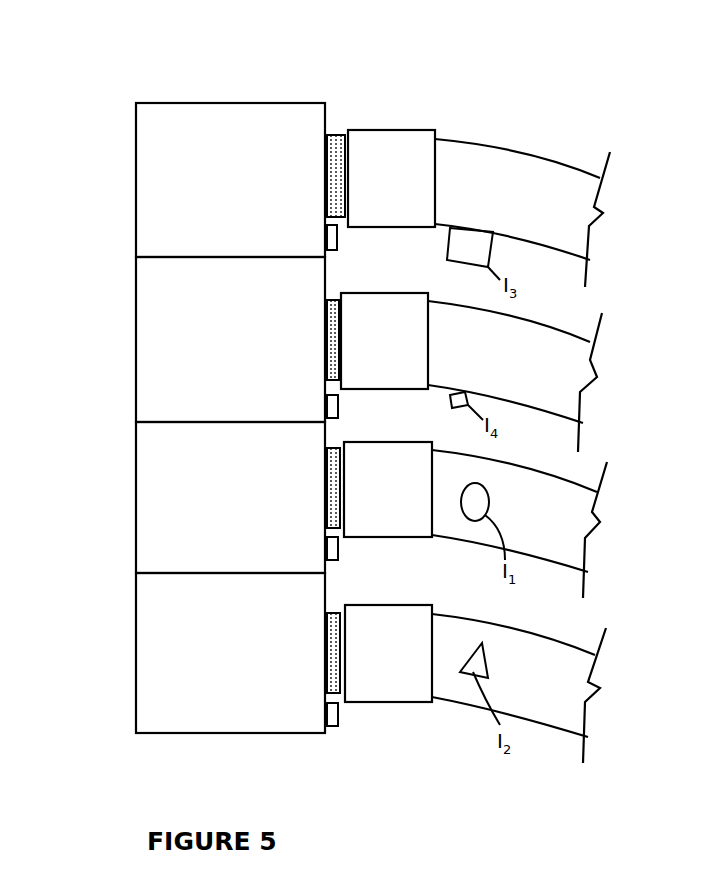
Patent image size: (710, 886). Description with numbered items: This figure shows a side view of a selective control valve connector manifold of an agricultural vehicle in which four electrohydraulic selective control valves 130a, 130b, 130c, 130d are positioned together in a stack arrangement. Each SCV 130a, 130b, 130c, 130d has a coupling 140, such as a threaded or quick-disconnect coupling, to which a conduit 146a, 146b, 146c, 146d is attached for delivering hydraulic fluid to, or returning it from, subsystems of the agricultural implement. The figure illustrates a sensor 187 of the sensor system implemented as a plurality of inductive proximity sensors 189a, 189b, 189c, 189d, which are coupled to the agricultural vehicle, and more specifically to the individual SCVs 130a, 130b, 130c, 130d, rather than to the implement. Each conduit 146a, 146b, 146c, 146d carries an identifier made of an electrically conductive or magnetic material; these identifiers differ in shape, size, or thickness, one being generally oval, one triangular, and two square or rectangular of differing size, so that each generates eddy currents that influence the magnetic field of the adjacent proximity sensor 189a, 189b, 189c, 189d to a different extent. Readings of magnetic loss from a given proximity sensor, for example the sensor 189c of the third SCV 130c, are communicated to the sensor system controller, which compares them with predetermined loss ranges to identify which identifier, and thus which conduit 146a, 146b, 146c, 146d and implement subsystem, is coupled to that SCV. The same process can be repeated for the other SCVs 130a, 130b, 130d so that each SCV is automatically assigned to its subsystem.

The first electrohydraulic selective control valve 130a is at (136, 195).
The second electrohydraulic selective control valve 130b is at (136, 343).
The third electrohydraulic selective control valve 130c is at (136, 487).
The fourth electrohydraulic selective control valve 130d is at (136, 655).
The coupling 140 is at (336, 158).
The first conduit 146a is at (568, 510).
The second conduit 146b is at (537, 707).
The third conduit 146c is at (532, 157).
The fourth conduit 146d is at (563, 362).
The sensor 187 is at (382, 690).
The first inductive proximity sensor 189a is at (339, 238).
The second inductive proximity sensor 189b is at (340, 400).
The third inductive proximity sensor 189c is at (340, 549).
The fourth inductive proximity sensor 189d is at (332, 714).